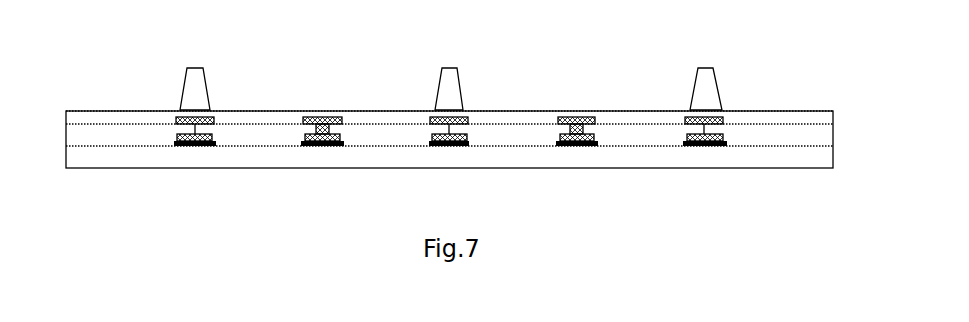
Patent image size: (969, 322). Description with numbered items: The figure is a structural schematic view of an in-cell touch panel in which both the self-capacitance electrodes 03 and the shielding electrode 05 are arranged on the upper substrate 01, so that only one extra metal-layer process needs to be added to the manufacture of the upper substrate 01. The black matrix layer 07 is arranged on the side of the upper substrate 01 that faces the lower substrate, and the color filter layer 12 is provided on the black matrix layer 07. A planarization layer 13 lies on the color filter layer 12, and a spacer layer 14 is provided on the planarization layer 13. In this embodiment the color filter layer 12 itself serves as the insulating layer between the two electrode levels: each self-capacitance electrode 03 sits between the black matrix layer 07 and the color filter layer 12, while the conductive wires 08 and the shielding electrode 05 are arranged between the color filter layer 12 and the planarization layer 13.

The upper substrate 01 is at (413, 163).
The color filter layer 12 is at (142, 132).
The planarization layer 13 is at (287, 118).
The self-capacitance electrodes 03 is at (430, 125).
The shielding electrode 05 is at (470, 122).
The black matrix layer 07 is at (197, 147).
The conductive wires 08 is at (578, 120).
The spacer layer 14 is at (707, 85).